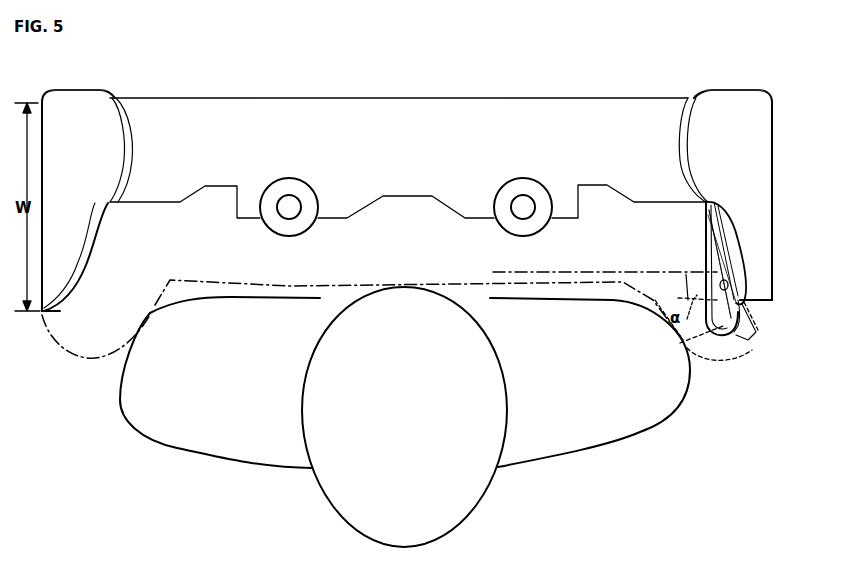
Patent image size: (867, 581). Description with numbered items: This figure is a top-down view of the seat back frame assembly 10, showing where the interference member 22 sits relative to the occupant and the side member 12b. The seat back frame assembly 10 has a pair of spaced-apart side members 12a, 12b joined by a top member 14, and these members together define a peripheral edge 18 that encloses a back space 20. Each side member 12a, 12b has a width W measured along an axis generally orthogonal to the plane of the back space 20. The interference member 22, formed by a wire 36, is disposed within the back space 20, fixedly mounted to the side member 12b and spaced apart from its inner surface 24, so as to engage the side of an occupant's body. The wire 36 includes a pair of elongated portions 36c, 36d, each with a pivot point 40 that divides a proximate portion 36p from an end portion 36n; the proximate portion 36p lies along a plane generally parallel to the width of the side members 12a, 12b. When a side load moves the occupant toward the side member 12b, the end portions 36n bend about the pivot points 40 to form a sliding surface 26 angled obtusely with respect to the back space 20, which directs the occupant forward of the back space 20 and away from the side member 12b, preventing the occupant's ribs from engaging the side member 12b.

The seat back frame assembly 10 is at (773, 84).
The side member 12a is at (86, 100).
The side member 12b is at (752, 128).
The top member 14 is at (402, 120).
The peripheral edge 18 is at (701, 84).
The back space 20 is at (470, 116).
The interference member 22 is at (716, 358).
The wire 36 is at (720, 264).
The inner surface 24 is at (728, 300).
The sliding surface 26 is at (724, 338).
The proximate portion 36p is at (707, 253).
The elongated portion 36c is at (683, 286).
The end portion 36n is at (680, 343).
The elongated portion 36d is at (752, 317).
The pivot point 40 is at (712, 292).